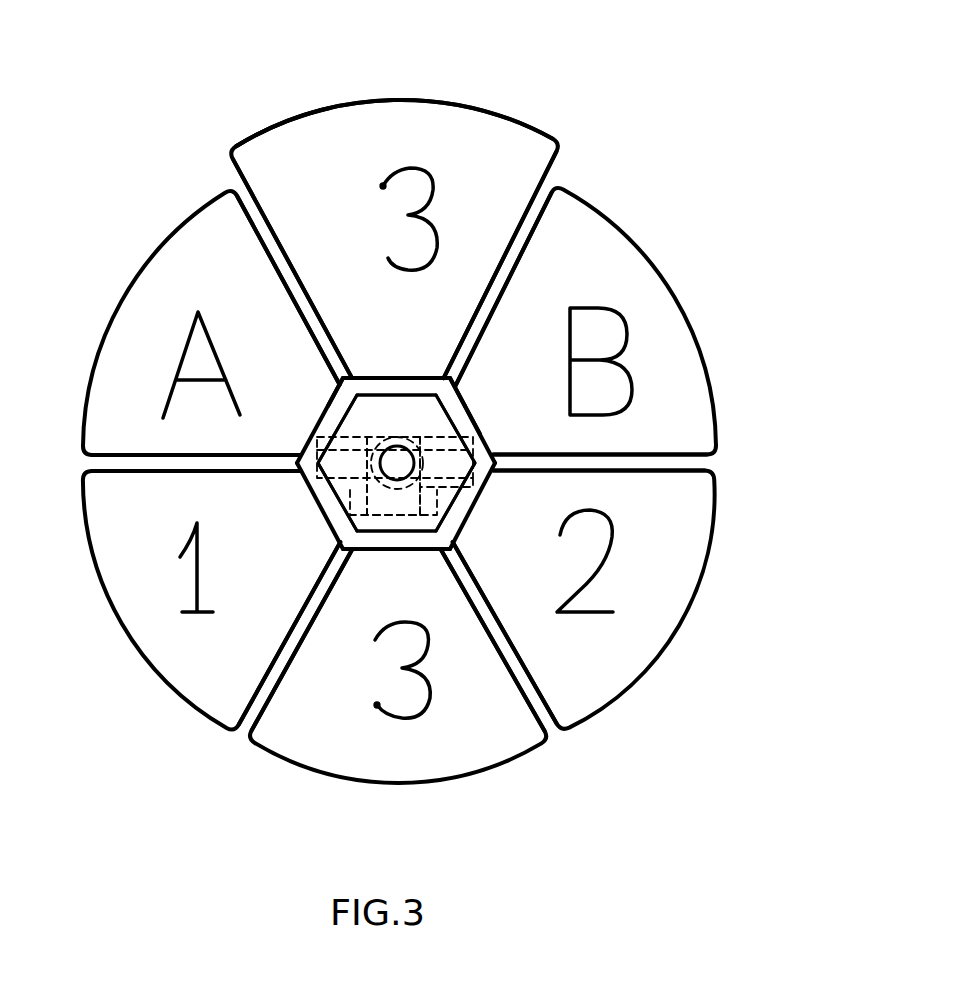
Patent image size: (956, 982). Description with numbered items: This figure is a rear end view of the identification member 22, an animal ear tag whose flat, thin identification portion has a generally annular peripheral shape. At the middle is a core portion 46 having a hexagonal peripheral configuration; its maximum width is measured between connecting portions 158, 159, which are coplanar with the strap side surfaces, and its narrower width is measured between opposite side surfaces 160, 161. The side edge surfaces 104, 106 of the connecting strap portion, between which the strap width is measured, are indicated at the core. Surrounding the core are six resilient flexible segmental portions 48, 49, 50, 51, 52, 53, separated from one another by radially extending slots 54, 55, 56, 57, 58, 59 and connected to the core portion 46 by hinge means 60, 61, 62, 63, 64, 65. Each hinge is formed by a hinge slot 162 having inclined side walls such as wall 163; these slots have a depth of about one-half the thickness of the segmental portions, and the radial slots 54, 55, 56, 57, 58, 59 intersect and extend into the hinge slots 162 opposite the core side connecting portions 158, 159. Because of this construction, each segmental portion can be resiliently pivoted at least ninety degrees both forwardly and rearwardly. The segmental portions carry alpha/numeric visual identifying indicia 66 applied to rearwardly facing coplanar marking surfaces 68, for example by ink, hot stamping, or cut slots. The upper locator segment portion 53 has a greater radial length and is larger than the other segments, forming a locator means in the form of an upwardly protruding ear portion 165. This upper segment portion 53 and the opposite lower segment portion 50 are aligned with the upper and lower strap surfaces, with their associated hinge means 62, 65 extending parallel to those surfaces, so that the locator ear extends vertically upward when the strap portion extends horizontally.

The identification member 22 is at (735, 553).
The core portion 46 is at (393, 415).
The segmental portion 48 is at (678, 305).
The segmental portion 49 is at (684, 618).
The lower segment portion 50 is at (388, 783).
The segmental portion 51 is at (90, 557).
The segmental portion 52 is at (128, 287).
The upper locator segment portion 53 is at (346, 103).
The radial slot 54 is at (560, 183).
The radial slot 55 is at (714, 458).
The radial slot 56 is at (551, 738).
The radial slot 57 is at (245, 738).
The radial slot 58 is at (83, 462).
The radial slot 59 is at (228, 188).
The hinge means 60 is at (464, 412).
The hinge means 61 is at (460, 512).
The hinge means 62 is at (367, 550).
The hinge means 63 is at (320, 502).
The hinge means 64 is at (325, 416).
The hinge means 65 is at (364, 378).
The alpha/numeric visual identifying indicia 66 is at (415, 192).
The marking surface 68 is at (285, 138).
The side edge surface 104 is at (317, 440).
The side edge surface 106 is at (473, 487).
The connecting portion 158 is at (320, 466).
The connecting portion 159 is at (482, 457).
The side surface 160 is at (420, 395).
The side surface 161 is at (412, 540).
The hinge slot 162 is at (330, 378).
The inclined side wall 163 is at (450, 377).
The ear portion 165 is at (441, 117).